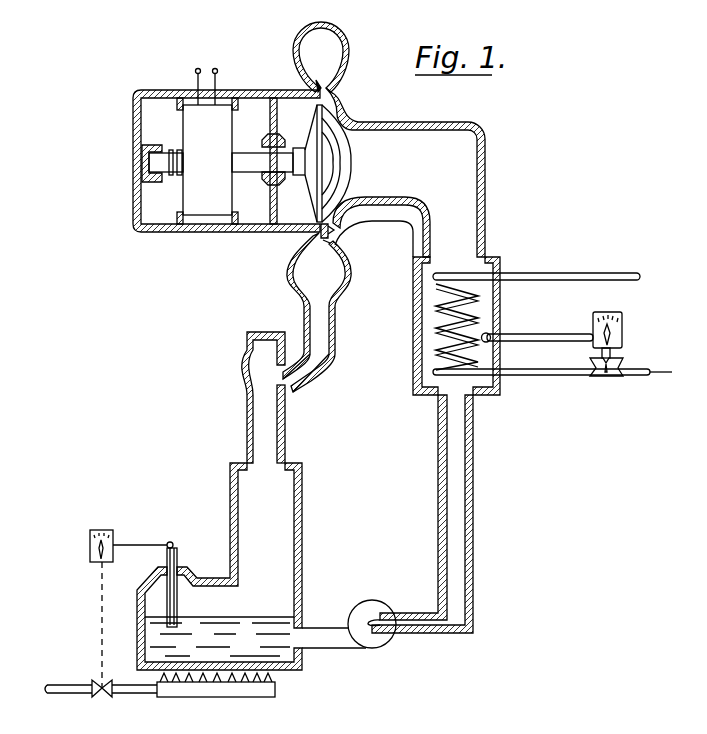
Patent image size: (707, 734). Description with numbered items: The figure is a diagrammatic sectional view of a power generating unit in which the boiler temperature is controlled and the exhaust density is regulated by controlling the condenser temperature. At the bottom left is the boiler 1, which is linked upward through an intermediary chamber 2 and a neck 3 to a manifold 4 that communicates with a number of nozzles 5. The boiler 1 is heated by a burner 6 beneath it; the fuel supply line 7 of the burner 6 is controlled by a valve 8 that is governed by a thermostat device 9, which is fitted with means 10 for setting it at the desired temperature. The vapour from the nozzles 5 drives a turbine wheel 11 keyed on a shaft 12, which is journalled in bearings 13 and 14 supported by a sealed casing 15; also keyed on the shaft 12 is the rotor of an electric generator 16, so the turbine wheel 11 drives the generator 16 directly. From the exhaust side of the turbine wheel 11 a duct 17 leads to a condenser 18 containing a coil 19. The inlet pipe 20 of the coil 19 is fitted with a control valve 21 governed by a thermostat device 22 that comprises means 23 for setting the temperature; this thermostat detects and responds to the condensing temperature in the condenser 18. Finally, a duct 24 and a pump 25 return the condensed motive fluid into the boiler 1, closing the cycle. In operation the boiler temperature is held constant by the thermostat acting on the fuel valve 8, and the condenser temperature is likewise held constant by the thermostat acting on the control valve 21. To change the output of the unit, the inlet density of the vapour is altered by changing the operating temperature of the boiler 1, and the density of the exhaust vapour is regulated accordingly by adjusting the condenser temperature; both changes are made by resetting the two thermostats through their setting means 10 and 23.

The boiler 1 is at (303, 540).
The intermediary chamber 2 is at (286, 430).
The neck 3 is at (313, 368).
The manifold 4 is at (327, 86).
The nozzles 5 is at (331, 233).
The burner 6 is at (186, 698).
The fuel supply line 7 is at (128, 694).
The valve 8 is at (94, 686).
The thermostat device 9 is at (178, 563).
The means for setting the temperature 10 is at (113, 530).
The turbine wheel 11 is at (338, 116).
The shaft 12 is at (249, 153).
The bearing 13 is at (152, 145).
The bearing 14 is at (275, 176).
The sealed casing 15 is at (151, 90).
The electric generator 16 is at (216, 118).
The duct 17 is at (440, 122).
The condenser 18 is at (504, 253).
The coil 19 is at (440, 320).
The inlet pipe 20 is at (531, 377).
The control valve 21 is at (603, 375).
The thermostat device 22 is at (519, 343).
The means for setting the temperature 23 is at (622, 320).
The duct 24 is at (472, 483).
The pump 25 is at (376, 603).